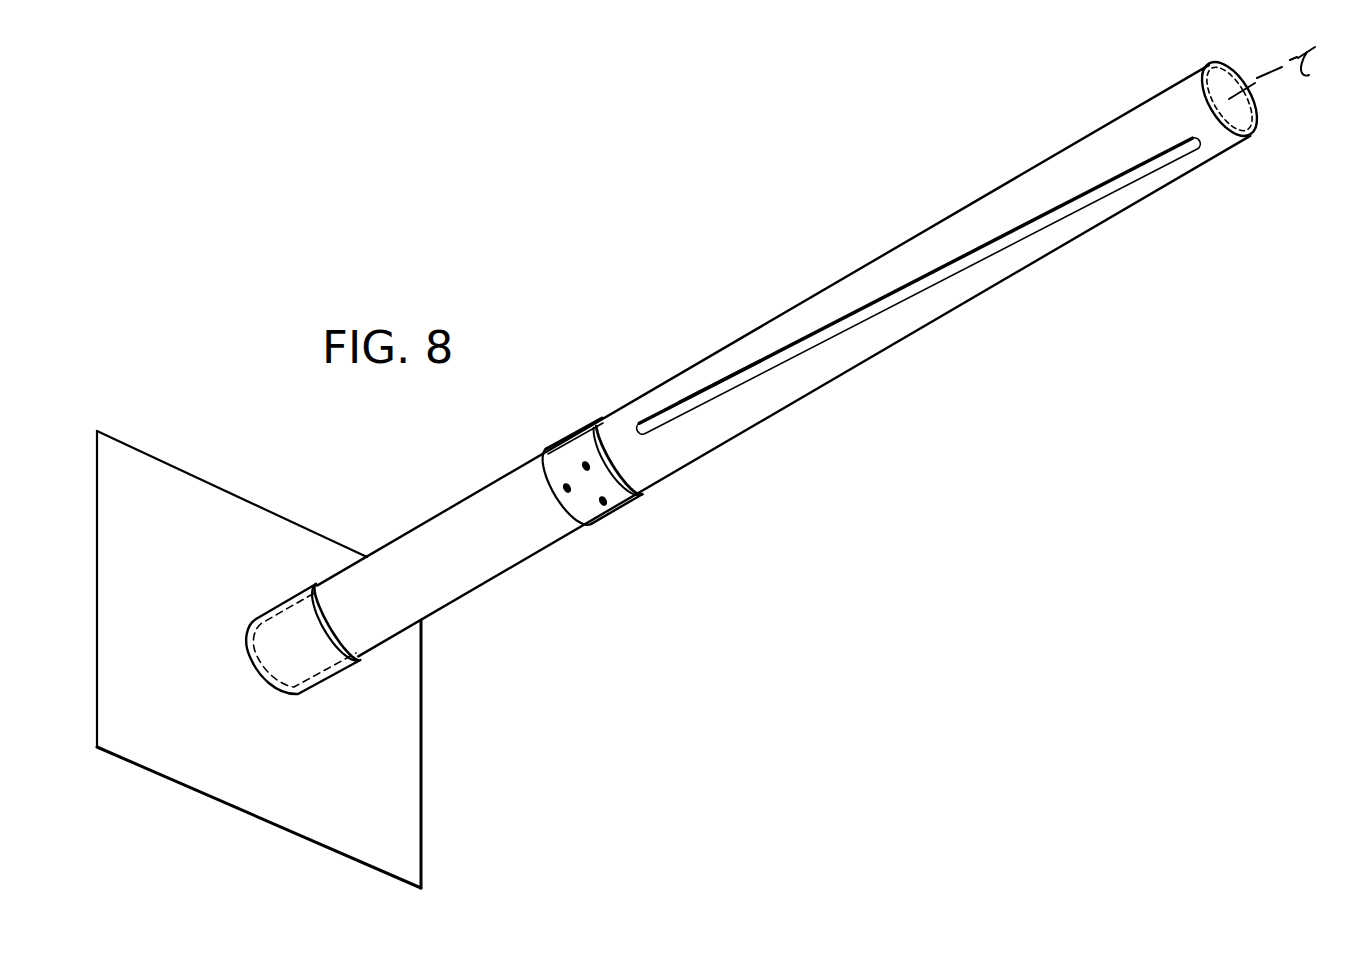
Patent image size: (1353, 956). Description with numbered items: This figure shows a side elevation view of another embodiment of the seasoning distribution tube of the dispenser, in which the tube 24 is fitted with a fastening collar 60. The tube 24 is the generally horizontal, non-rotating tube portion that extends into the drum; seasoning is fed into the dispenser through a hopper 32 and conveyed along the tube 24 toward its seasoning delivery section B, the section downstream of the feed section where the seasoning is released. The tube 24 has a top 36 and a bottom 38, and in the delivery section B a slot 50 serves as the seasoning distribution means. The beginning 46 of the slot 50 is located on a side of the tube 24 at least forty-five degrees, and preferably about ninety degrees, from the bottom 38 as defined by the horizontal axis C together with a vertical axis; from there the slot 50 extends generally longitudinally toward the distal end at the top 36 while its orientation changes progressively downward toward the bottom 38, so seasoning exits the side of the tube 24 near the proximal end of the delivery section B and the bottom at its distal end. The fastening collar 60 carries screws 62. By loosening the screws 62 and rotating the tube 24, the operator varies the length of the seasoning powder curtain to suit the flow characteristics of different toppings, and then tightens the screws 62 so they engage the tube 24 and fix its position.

The tube 24 is at (1047, 163).
The hopper 32 is at (407, 704).
The top 36 is at (1213, 69).
The bottom 38 is at (1213, 129).
The beginning of slot 46 is at (641, 421).
The slot 50 is at (683, 401).
The fastening collar 60 is at (619, 513).
The screws 62 is at (567, 486).
The seasoning delivery section B is at (843, 294).
The horizontal axis C is at (1276, 73).